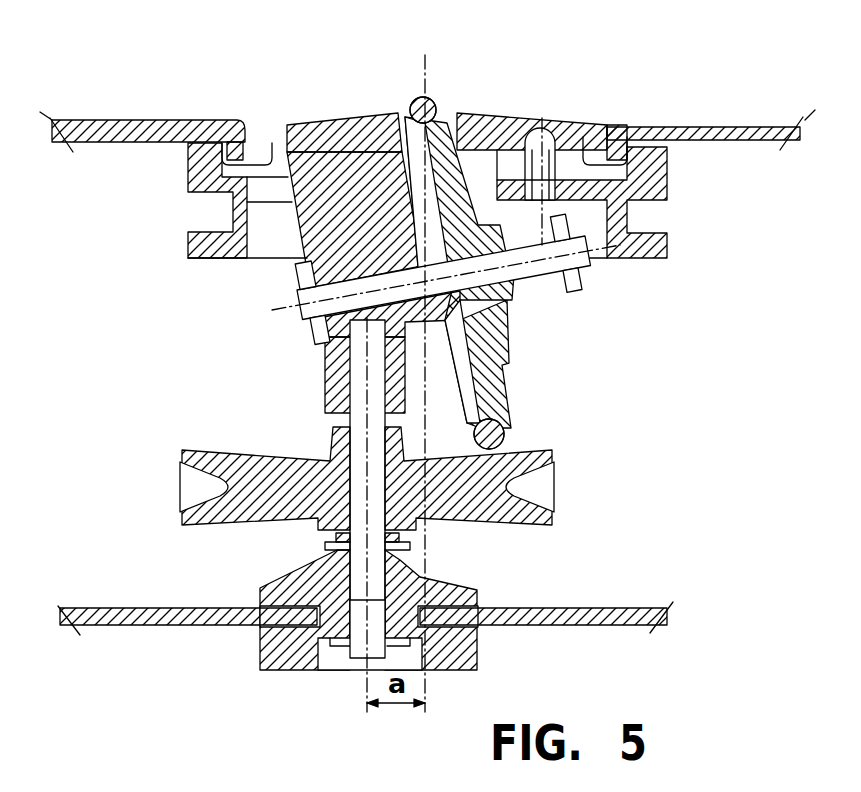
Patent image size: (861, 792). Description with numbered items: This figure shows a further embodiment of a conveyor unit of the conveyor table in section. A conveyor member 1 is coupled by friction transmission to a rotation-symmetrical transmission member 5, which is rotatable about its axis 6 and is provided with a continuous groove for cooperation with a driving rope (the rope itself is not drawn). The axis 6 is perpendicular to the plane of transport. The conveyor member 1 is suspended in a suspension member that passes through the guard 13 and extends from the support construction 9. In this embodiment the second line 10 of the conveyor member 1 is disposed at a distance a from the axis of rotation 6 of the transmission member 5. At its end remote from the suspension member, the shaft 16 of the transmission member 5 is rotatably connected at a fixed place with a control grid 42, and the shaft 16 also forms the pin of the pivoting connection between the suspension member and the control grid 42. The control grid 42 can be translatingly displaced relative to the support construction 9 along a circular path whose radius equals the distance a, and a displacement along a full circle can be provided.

The support construction 9 is at (427, 153).
The guard 13 is at (723, 123).
The conveyor member 1 is at (498, 345).
The transmission member 5 is at (298, 470).
The axis of rotation 6 is at (367, 693).
The second line 10 is at (428, 546).
The shaft 16 is at (345, 546).
The control grid 42 is at (570, 608).